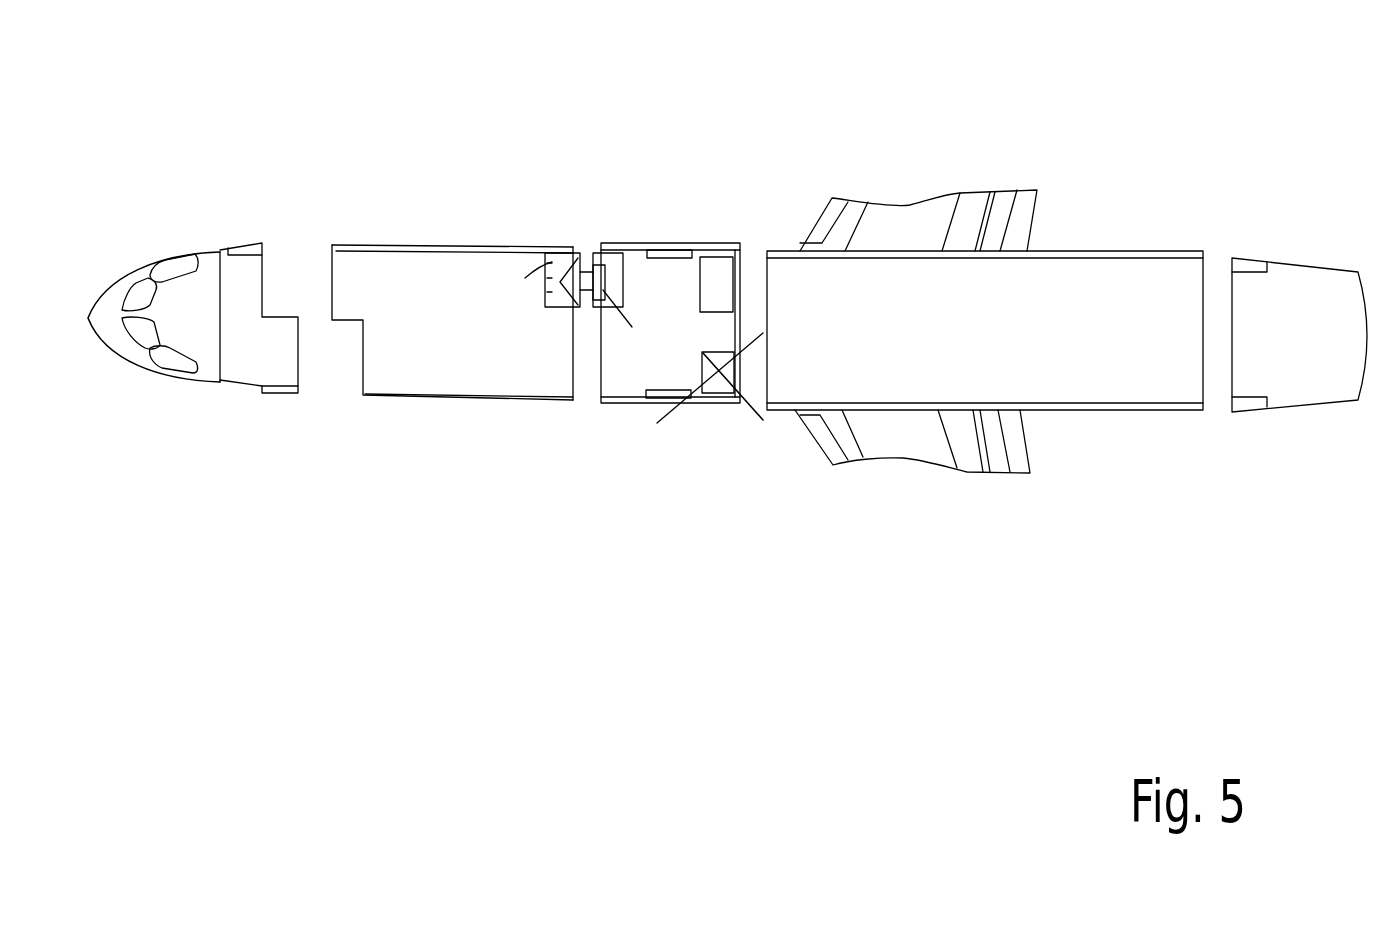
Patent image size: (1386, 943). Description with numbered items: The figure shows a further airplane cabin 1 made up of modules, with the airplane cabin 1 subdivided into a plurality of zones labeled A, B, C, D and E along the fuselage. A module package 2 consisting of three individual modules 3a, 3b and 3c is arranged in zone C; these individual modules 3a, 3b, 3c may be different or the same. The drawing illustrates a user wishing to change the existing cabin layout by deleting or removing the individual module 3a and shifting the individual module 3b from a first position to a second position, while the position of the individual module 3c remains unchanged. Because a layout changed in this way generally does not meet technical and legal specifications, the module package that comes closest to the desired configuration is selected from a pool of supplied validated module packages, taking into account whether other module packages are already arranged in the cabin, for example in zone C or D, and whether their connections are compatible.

The airplane cabin 1 is at (796, 139).
The module package 2 is at (611, 383).
The individual module 3a is at (715, 397).
The individual module 3b is at (605, 248).
The individual module 3c is at (718, 250).